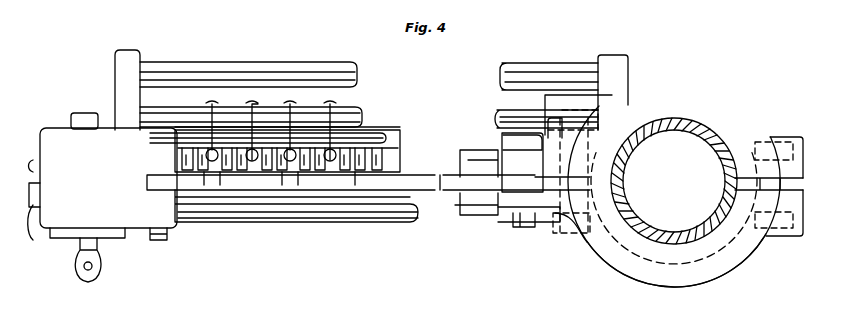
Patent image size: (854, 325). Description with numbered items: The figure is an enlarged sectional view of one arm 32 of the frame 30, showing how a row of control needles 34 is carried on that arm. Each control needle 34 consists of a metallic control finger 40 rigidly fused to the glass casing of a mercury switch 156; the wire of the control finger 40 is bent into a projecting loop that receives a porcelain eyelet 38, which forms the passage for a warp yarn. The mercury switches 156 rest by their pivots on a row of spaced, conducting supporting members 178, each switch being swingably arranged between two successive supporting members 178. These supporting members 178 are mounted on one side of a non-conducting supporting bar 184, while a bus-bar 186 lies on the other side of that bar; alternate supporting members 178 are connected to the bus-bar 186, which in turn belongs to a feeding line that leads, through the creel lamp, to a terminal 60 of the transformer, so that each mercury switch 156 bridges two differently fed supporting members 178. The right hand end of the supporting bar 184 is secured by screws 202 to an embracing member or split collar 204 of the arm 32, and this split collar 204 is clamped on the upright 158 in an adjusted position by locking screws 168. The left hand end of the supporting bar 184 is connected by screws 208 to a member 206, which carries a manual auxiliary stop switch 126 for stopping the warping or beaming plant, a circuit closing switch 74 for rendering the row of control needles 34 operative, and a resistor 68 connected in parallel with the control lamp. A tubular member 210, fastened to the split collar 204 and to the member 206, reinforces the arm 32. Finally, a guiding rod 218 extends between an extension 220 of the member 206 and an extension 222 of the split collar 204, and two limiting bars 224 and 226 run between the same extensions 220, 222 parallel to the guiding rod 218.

The frame 30 is at (674, 157).
The arm 32 is at (380, 232).
The control needle 34 is at (306, 128).
The eyelet 38 is at (250, 112).
The control finger 40 is at (197, 127).
The terminal 60 is at (97, 272).
The resistor 68 is at (90, 120).
The circuit closing switch 74 is at (33, 157).
The manual auxiliary stop switch 126 is at (30, 212).
The mercury switch 156 is at (287, 128).
The upright 158 is at (705, 127).
The locking screw 168 is at (555, 120).
The supporting member 178 is at (237, 172).
The supporting bar 184 is at (485, 203).
The bus-bar 186 is at (358, 186).
The screw 202 is at (522, 222).
The split collar 204 is at (698, 78).
The member 206 is at (58, 143).
The screw 208 is at (160, 122).
The tubular member 210 is at (411, 224).
The guiding rod 218 is at (215, 67).
The extension 220 is at (127, 58).
The extension 222 is at (613, 63).
The limiting bar 224 is at (506, 120).
The limiting bar 226 is at (503, 145).